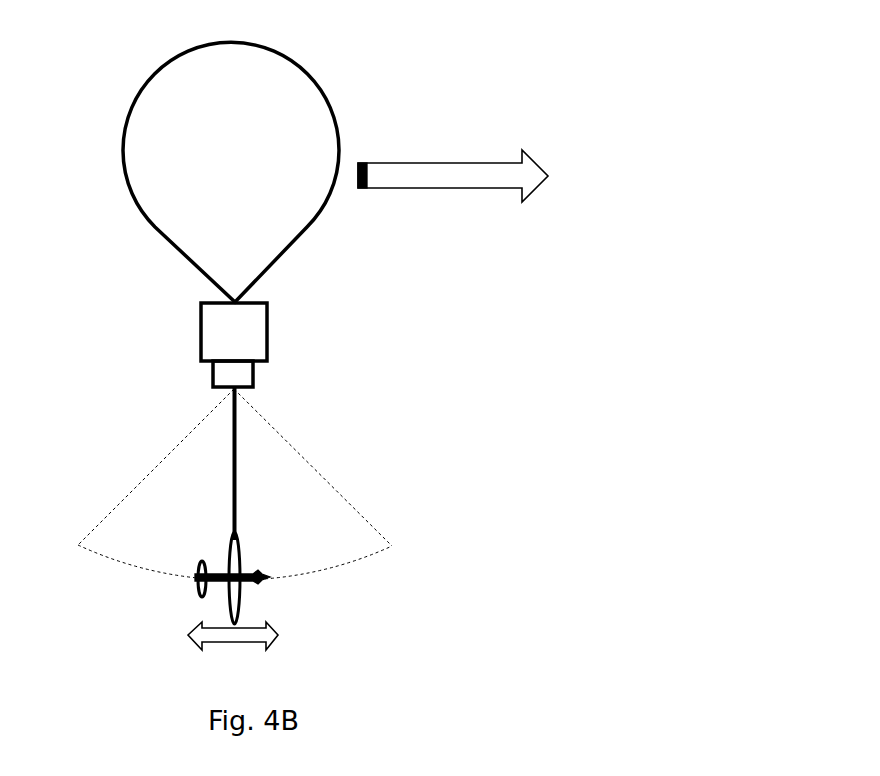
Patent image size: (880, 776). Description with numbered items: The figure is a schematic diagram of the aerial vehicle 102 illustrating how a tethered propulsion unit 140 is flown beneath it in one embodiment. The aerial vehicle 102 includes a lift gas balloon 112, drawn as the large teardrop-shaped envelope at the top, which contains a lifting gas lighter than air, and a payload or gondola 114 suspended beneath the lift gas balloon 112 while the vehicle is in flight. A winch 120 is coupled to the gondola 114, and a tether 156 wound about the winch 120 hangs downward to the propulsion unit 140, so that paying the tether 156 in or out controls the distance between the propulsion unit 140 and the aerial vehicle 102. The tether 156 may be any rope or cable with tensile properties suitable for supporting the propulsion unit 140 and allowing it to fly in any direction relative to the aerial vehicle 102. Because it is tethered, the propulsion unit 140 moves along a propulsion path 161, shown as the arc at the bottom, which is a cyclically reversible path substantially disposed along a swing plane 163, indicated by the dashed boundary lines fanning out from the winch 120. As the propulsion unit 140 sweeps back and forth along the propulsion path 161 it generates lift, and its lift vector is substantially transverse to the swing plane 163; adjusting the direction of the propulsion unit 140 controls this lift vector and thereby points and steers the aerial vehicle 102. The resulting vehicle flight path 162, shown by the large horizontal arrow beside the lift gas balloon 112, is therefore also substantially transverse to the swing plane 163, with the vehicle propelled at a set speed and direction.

The aerial vehicle 102 is at (93, 114).
The lift gas balloon 112 is at (322, 85).
The gondola 114 is at (268, 324).
The winch 120 is at (253, 377).
The propulsion unit 140 is at (231, 537).
The tether 156 is at (235, 455).
The propulsion path 161 is at (315, 568).
The vehicle flight path 162 is at (429, 162).
The swing plane 163 is at (360, 508).